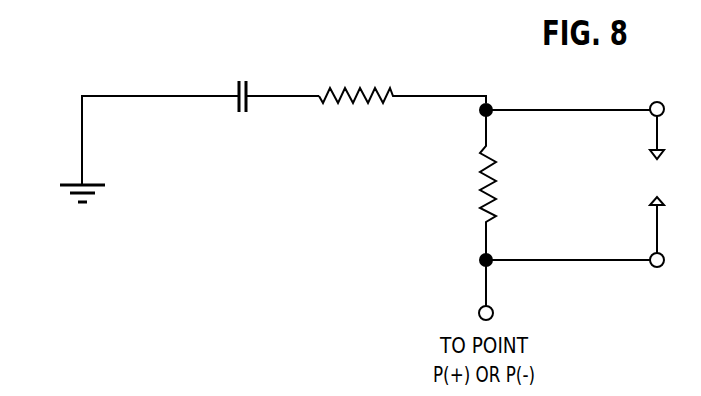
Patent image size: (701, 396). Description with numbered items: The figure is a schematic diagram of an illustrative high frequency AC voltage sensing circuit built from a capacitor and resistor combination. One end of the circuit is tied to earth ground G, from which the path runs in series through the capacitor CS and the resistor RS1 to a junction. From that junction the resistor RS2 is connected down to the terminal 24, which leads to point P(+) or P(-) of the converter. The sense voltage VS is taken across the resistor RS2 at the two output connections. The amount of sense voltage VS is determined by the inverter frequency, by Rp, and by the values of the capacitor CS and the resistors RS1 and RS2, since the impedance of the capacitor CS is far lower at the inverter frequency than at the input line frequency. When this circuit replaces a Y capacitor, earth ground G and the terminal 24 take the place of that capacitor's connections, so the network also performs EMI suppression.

The terminal 24 is at (477, 311).
The earth ground G is at (134, 149).
The capacitor CS is at (274, 80).
The resistor RS1 is at (402, 76).
The resistor RS2 is at (463, 185).
The sense voltage VS is at (576, 184).